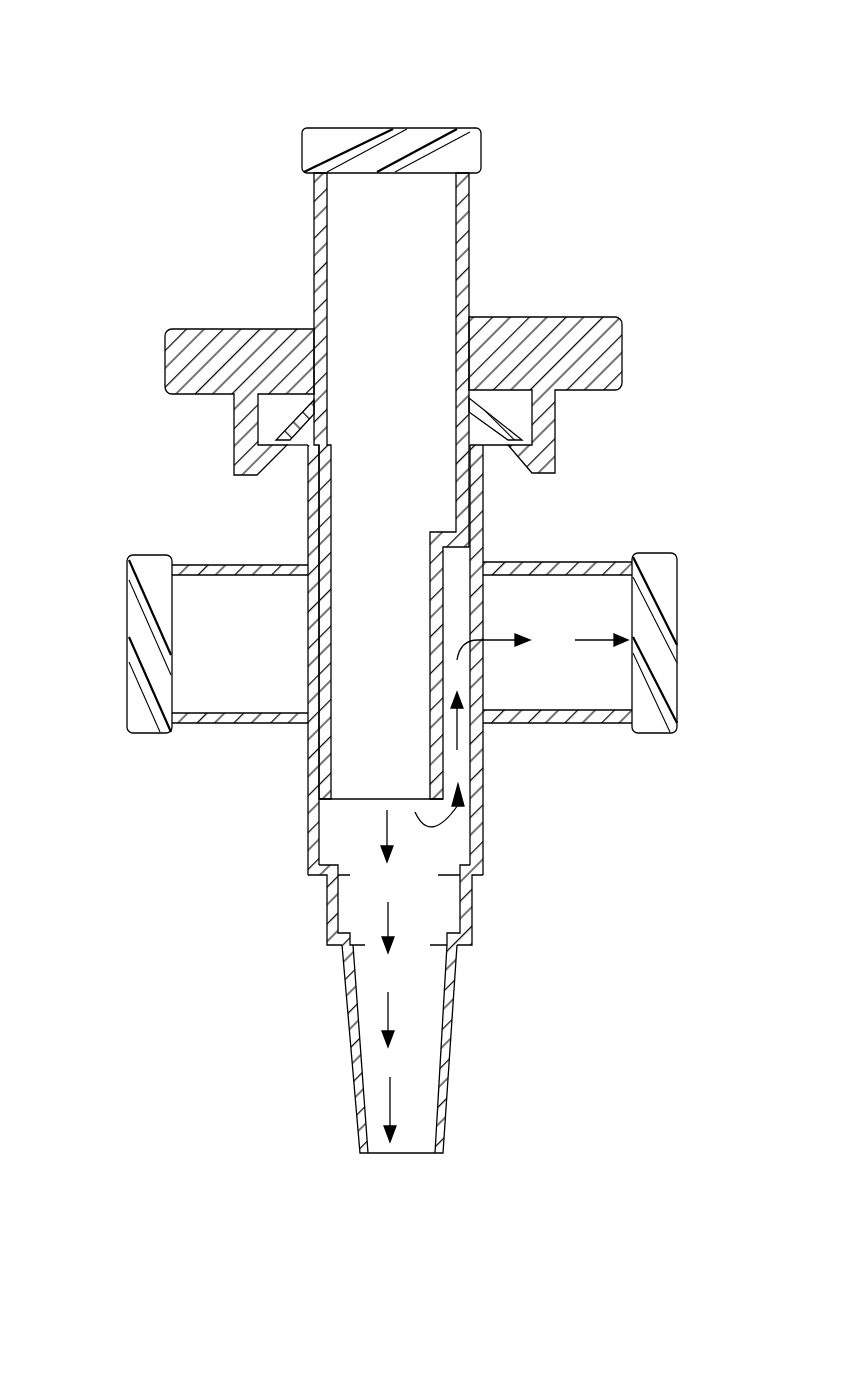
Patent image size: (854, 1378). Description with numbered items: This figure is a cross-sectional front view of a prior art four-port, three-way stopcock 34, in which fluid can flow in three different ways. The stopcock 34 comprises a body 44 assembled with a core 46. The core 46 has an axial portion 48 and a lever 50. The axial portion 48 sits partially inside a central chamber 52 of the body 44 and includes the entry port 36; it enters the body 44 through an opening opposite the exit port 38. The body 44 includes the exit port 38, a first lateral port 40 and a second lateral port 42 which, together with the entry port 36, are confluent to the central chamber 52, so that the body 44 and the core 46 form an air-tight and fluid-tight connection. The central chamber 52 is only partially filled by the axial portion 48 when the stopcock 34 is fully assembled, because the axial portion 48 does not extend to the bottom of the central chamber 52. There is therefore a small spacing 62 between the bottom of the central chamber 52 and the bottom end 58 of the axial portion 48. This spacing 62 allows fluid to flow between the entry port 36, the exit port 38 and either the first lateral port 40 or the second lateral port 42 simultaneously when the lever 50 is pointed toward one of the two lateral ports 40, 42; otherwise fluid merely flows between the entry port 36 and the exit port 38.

The four-port, three-way stopcock 34 is at (422, 80).
The entry port 36 is at (366, 128).
The exit port 38 is at (397, 1157).
The first lateral port 40 is at (127, 617).
The second lateral port 42 is at (678, 606).
The body 44 is at (222, 723).
The core 46 is at (297, 326).
The axial portion 48 is at (470, 252).
The lever 50 is at (622, 345).
The central chamber 52 is at (308, 537).
The bottom end 58 is at (358, 800).
The spacing 62 is at (375, 850).